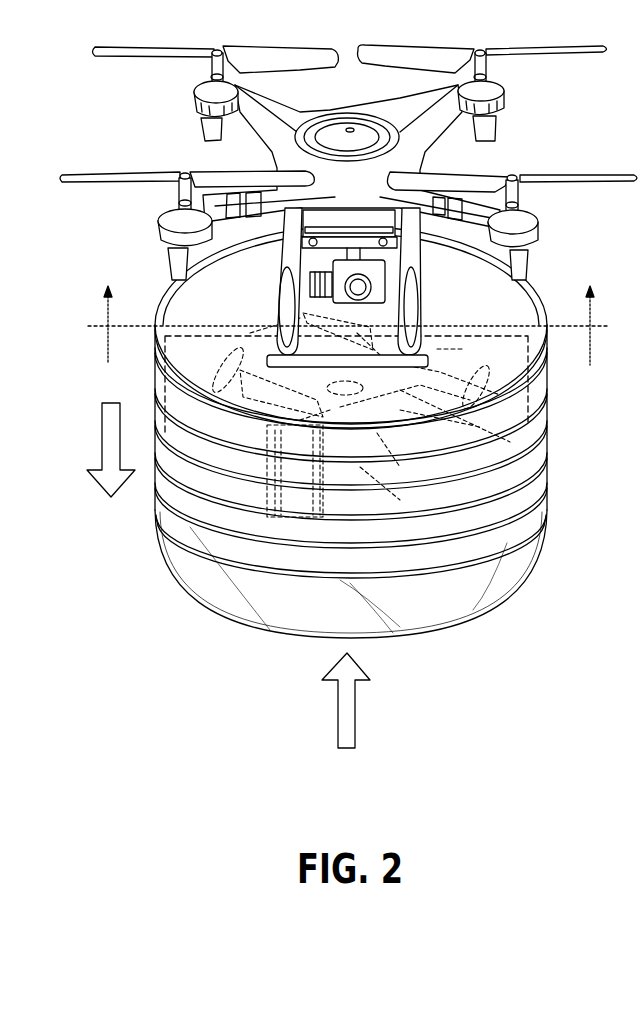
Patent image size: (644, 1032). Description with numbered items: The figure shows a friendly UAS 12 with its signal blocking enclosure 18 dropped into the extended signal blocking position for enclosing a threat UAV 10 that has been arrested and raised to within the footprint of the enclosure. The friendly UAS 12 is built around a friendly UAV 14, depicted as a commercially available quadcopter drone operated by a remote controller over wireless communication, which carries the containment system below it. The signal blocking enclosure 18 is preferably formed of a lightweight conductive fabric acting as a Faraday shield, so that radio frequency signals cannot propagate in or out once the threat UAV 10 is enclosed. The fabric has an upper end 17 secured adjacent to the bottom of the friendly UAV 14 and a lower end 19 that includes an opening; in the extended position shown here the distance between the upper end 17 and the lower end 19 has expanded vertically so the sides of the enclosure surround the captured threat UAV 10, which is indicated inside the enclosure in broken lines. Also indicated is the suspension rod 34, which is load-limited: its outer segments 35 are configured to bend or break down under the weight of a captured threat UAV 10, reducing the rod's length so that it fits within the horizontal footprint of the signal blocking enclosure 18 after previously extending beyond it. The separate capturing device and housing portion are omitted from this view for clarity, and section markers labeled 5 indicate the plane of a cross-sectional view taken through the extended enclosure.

The threat UAV 10 is at (325, 439).
The friendly UAS 12 is at (348, 206).
The friendly UAV 14 is at (198, 100).
The upper end 17 is at (543, 307).
The signal blocking enclosure 18 is at (543, 487).
The lower end 19 is at (483, 607).
The suspension rod 34 is at (183, 310).
The outer segments 35 is at (165, 376).
The section line 5- 5 is at (348, 325).